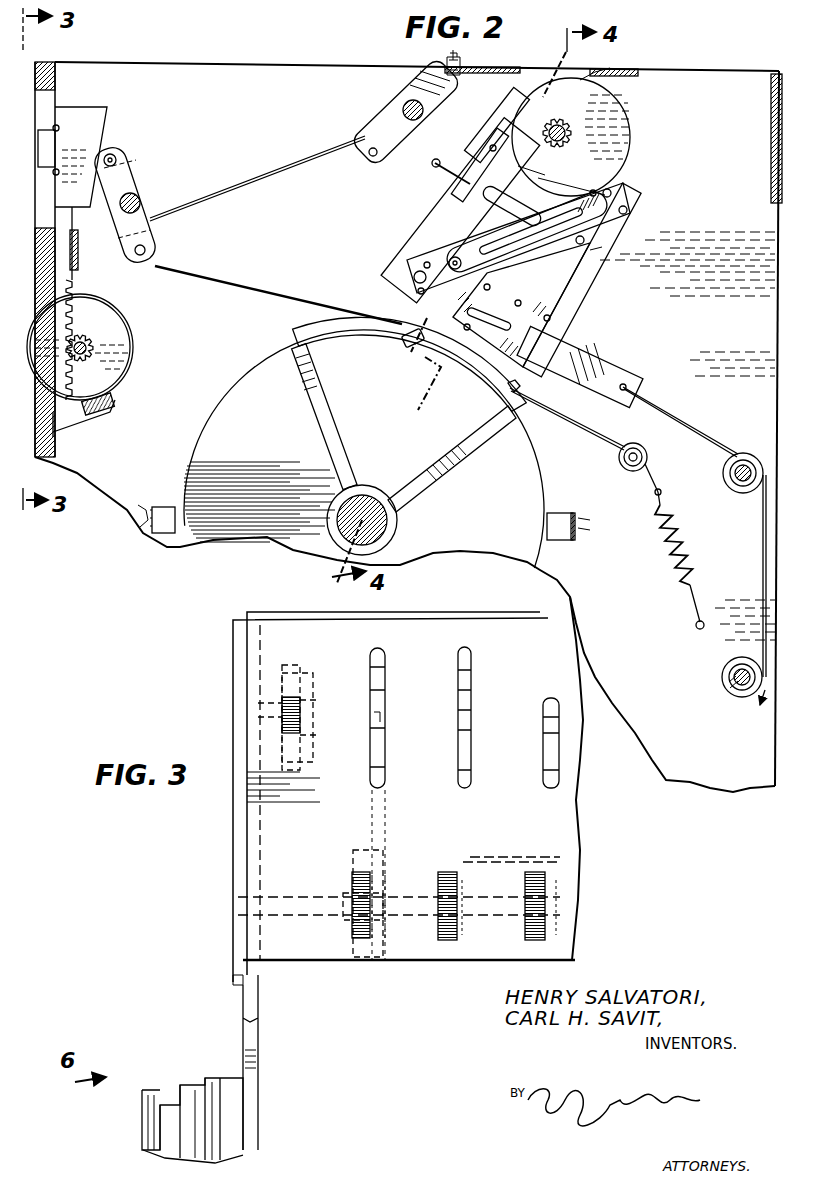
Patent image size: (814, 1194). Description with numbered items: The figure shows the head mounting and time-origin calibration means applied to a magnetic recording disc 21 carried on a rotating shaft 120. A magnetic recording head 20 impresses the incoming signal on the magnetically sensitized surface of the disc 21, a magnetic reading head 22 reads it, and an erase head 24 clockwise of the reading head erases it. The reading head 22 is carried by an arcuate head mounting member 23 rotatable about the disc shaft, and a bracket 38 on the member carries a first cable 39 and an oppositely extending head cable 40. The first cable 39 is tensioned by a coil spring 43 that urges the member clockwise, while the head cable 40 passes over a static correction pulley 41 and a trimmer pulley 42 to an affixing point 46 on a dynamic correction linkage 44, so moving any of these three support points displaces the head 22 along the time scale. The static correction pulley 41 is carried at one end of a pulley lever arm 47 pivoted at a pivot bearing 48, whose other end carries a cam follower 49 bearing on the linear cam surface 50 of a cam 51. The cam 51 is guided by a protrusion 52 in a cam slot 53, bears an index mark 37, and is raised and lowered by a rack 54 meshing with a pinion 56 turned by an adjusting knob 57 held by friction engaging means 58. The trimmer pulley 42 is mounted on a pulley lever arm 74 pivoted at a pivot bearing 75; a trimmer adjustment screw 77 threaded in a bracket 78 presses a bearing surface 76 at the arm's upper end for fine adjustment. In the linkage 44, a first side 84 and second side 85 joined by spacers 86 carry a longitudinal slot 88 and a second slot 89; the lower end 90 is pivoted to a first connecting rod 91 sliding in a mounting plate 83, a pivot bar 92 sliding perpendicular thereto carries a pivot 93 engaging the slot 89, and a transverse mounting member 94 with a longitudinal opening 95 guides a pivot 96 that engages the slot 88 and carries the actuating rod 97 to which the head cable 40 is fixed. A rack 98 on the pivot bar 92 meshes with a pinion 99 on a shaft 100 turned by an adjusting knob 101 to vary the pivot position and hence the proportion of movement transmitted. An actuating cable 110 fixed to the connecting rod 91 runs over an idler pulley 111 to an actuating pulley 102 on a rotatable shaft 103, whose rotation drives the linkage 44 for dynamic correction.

In FIG. 2, the magnetic recording head 20 is at (165, 540).
In FIG. 2, the rotating disc 21 is at (222, 428).
In FIG. 2, the magnetic reading head 22 is at (411, 352).
In FIG. 2, the head mounting member 23 is at (330, 450).
In FIG. 2, the erase head 24 is at (565, 540).
In FIG. 3, the index mark 37 is at (386, 718).
In FIG. 2, the bracket 38 is at (522, 390).
In FIG. 2, the first cable 39 is at (648, 492).
In FIG. 2, the head cable 40 is at (303, 308).
In FIG. 2, the static correction pulley 41 is at (158, 248).
In FIG. 2, the trimmer pulley 42 is at (372, 160).
In FIG. 2, the coil spring 43 is at (688, 570).
In FIG. 2, the dynamic correction linkage 44 is at (605, 243).
In FIG. 2, the affixing point 46 is at (444, 156).
In FIG. 2, the pulley lever arm 47 is at (138, 182).
In FIG. 2, the pivot bearing 48 is at (141, 203).
In FIG. 2, the cam follower 49 is at (114, 154).
In FIG. 2, the cam surface 50 is at (108, 110).
In FIG. 2, the cam 51 is at (98, 102).
In FIG. 3, the cam 51 is at (472, 686).
In FIG. 2, the protrusion 52 is at (44, 147).
In FIG. 3, the protrusion 52 is at (386, 702).
In FIG. 2, the cam slot 53 is at (42, 216).
In FIG. 3, the cam slot 53 is at (386, 679).
In FIG. 2, the rack 54 is at (78, 285).
In FIG. 2, the pinion 56 is at (95, 344).
In FIG. 2, the adjusting knob 57 is at (28, 345).
In FIG. 3, the adjusting knob 57 is at (372, 875).
In FIG. 2, the friction engaging means 58 is at (118, 398).
In FIG. 2, the pulley lever arm 74 is at (392, 124).
In FIG. 2, the pivot bearing 75 is at (408, 102).
In FIG. 2, the bearing surface 76 is at (446, 60).
In FIG. 2, the trimmer adjustment screw 77 is at (462, 58).
In FIG. 2, the bracket 78 is at (490, 68).
In FIG. 2, the mounting plate 83 is at (570, 307).
In FIG. 2, the first side 84 is at (575, 258).
In FIG. 2, the second side 85 is at (466, 265).
In FIG. 2, the spacers 86 is at (628, 205).
In FIG. 2, the longitudinal slot 88 is at (577, 292).
In FIG. 2, the second slot 89 is at (545, 260).
In FIG. 2, the lower end 90 is at (408, 268).
In FIG. 2, the first connecting rod 91 is at (628, 378).
In FIG. 2, the pivot bar 92 is at (492, 116).
In FIG. 2, the pivot 93 is at (432, 232).
In FIG. 2, the transverse mounting member 94 is at (485, 196).
In FIG. 2, the longitudinal opening 95 is at (478, 148).
In FIG. 2, the pivot 96 is at (585, 190).
In FIG. 2, the actuating rod 97 is at (436, 170).
In FIG. 2, the rack 98 is at (570, 150).
In FIG. 2, the pinion 99 is at (572, 132).
In FIG. 2, the shaft 100 is at (610, 70).
In FIG. 2, the adjusting knob 101 is at (598, 65).
In FIG. 2, the actuating pulley 102 is at (722, 678).
In FIG. 2, the rotatable shaft 103 is at (730, 688).
In FIG. 2, the actuating cable 110 is at (688, 414).
In FIG. 2, the idler pulley 111 is at (730, 474).
In FIG. 2, the rotating shaft 120 is at (397, 527).